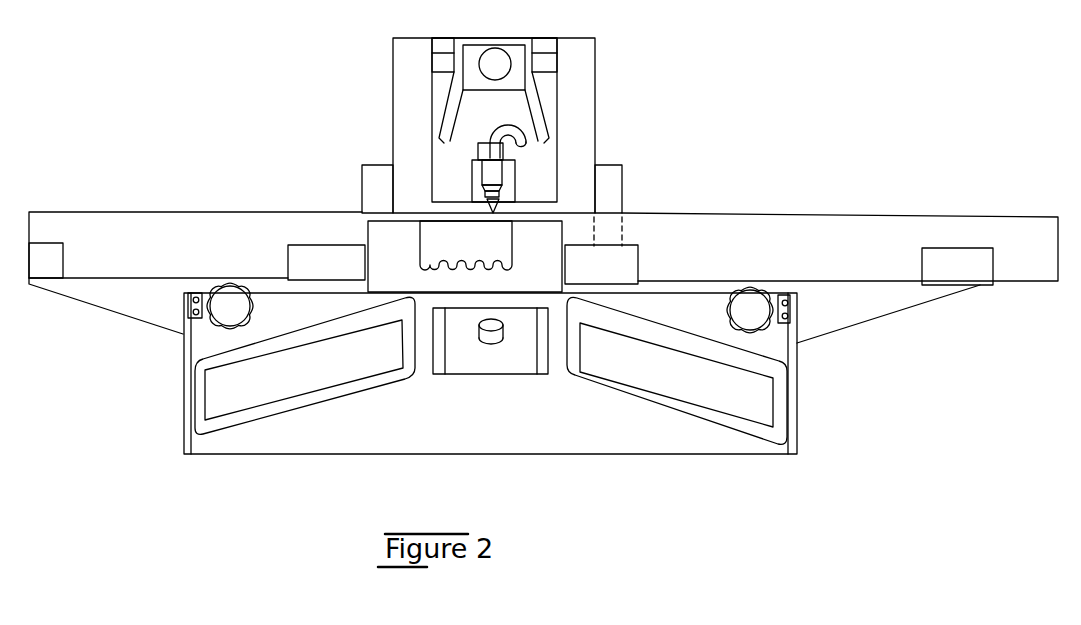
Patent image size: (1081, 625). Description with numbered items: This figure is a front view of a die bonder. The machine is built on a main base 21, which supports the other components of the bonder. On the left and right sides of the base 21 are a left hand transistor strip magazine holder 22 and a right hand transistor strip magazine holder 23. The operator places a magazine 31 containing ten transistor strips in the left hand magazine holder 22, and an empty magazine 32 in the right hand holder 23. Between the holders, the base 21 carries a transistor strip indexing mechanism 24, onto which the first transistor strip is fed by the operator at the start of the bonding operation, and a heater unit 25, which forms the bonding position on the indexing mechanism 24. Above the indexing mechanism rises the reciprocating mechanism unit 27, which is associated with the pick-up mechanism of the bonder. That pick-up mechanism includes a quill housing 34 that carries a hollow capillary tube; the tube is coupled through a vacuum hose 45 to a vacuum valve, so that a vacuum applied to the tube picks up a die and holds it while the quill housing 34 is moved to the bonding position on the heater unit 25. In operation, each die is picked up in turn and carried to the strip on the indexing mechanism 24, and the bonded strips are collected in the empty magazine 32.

The main base 21 is at (380, 448).
The left hand transistor strip magazine holder 22 is at (138, 313).
The right hand transistor strip magazine holder 23 is at (835, 333).
The transistor strip indexing mechanism 24 is at (368, 228).
The heater unit 25 is at (428, 244).
The reciprocating mechanism unit 27 is at (390, 98).
The magazine 31 is at (192, 212).
The empty magazine 32 is at (823, 217).
The quill housing 34 is at (483, 167).
The vacuum hose 45 is at (517, 134).